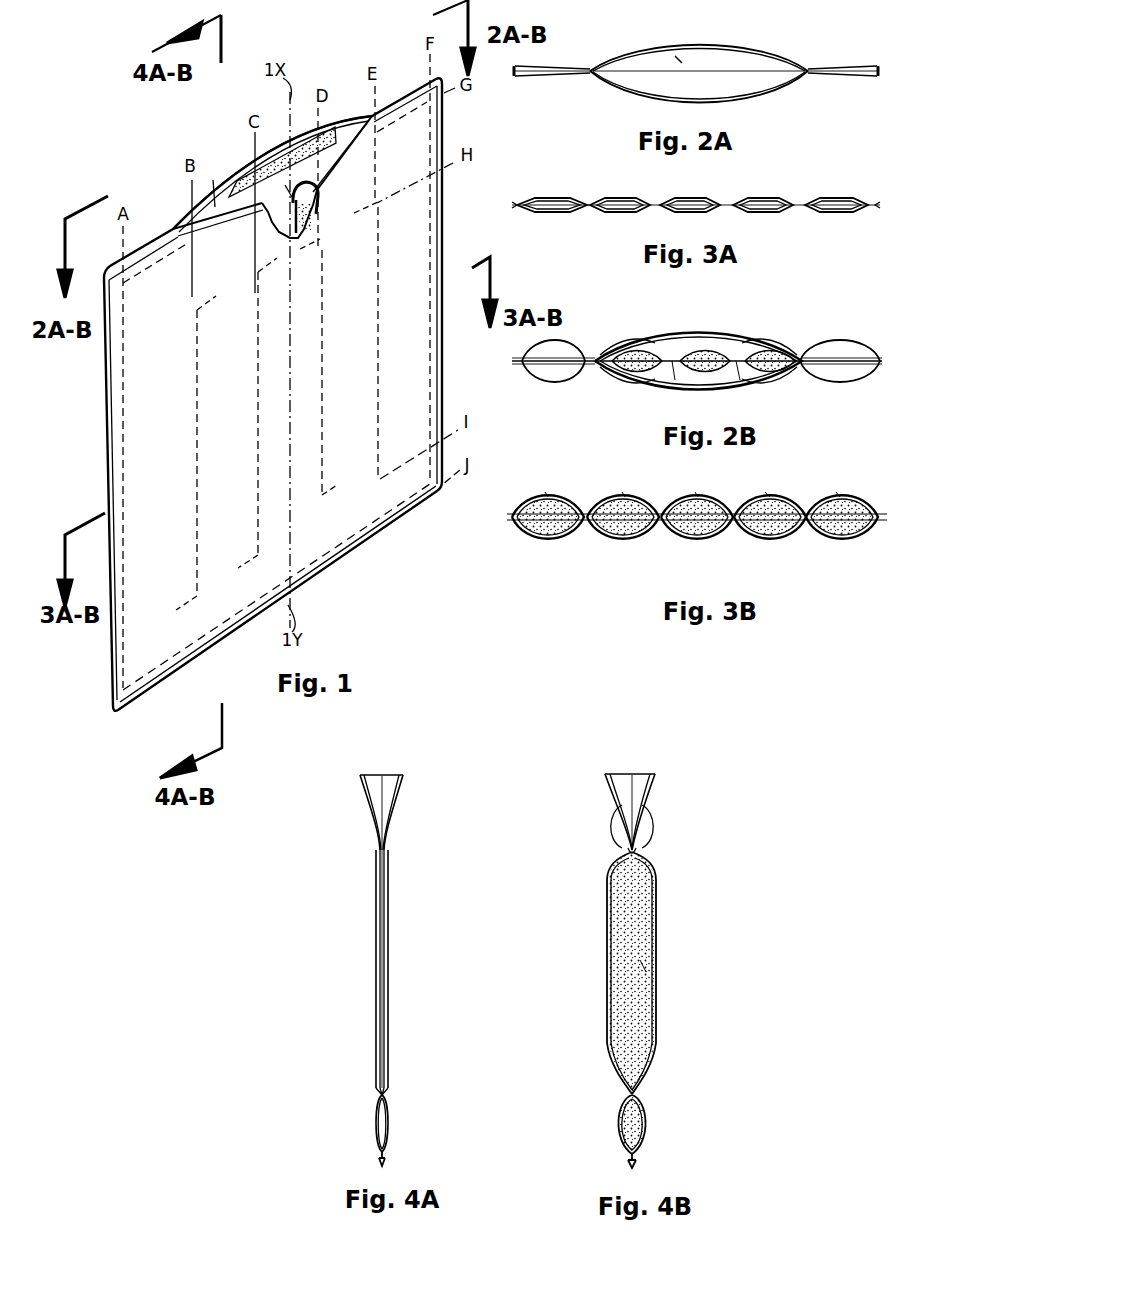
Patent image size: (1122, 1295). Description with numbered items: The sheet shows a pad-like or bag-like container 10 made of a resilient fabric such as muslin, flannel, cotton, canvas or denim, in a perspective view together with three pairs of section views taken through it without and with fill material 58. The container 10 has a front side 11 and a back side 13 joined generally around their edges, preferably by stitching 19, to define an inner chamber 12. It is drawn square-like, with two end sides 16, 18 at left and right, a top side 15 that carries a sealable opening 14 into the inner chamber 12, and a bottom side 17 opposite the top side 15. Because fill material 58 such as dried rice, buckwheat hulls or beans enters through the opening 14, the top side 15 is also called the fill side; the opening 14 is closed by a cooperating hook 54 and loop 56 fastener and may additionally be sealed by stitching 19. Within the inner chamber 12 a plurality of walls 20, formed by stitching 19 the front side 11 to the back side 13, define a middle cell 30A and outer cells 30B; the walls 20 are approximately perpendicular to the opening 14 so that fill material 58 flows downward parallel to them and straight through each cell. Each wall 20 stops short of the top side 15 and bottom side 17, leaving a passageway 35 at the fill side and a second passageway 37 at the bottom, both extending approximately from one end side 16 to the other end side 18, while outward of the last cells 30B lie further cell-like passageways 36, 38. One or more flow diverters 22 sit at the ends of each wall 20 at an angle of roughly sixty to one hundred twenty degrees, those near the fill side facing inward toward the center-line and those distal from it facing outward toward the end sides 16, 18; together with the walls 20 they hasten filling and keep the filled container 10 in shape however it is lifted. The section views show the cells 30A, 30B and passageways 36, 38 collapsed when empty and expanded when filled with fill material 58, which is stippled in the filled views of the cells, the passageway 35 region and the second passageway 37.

In FIG. 1, the container 10 is at (98, 160).
In FIG. 1, the front side 11 is at (237, 232).
In FIG. 2A, the front side 11 is at (745, 100).
In FIG. 4A, the front side 11 is at (374, 940).
In FIG. 4B, the front side 11 is at (607, 928).
In FIG. 1, the inner chamber 12 is at (345, 133).
In FIG. 1, the back side 13 is at (180, 225).
In FIG. 2A, the back side 13 is at (718, 45).
In FIG. 4A, the back side 13 is at (396, 985).
In FIG. 4B, the back side 13 is at (656, 918).
In FIG. 1, the sealable opening 14 is at (231, 180).
In FIG. 2A, the sealable opening 14 is at (682, 63).
In FIG. 4A, the sealable opening 14 is at (390, 783).
In FIG. 4B, the sealable opening 14 is at (640, 785).
In FIG. 1, the top side 15 is at (410, 83).
In FIG. 4A, the top side 15 is at (405, 775).
In FIG. 4B, the top side 15 is at (655, 776).
In FIG. 1, the end side 16 is at (106, 445).
In FIG. 2A, the end side 16 is at (515, 76).
In FIG. 3A, the end side 16 is at (512, 210).
In FIG. 1, the bottom side 17 is at (349, 556).
In FIG. 4A, the bottom side 17 is at (385, 1163).
In FIG. 4B, the bottom side 17 is at (637, 1163).
In FIG. 1, the end side 18 is at (446, 104).
In FIG. 2A, the end side 18 is at (880, 66).
In FIG. 3A, the end side 18 is at (872, 212).
In FIG. 1, the stitching 19 is at (178, 662).
In FIG. 1, the wall 20 is at (380, 285).
In FIG. 1, the flow diverter 22 is at (364, 218).
In FIG. 2B, the flow diverter 22 is at (675, 380).
In FIG. 1, the cell 30A is at (290, 360).
In FIG. 3A, the cell 30A is at (692, 198).
In FIG. 2B, the cell 30A is at (694, 343).
In FIG. 3B, the cell 30A is at (702, 544).
In FIG. 1, the cell 30B is at (320, 268).
In FIG. 3A, the cell 30B is at (626, 198).
In FIG. 2B, the cell 30B is at (648, 344).
In FIG. 3B, the cell 30B is at (626, 544).
In FIG. 4B, the cell 30B is at (650, 968).
In FIG. 1, the passageway 35 is at (308, 210).
In FIG. 4B, the passageway 35 is at (648, 836).
In FIG. 1, the passageway 36 is at (149, 457).
In FIG. 3A, the passageway 36 is at (548, 198).
In FIG. 2B, the passageway 36 is at (556, 385).
In FIG. 3B, the passageway 36 is at (546, 544).
In FIG. 1, the second passageway 37 is at (383, 507).
In FIG. 4B, the second passageway 37 is at (650, 1130).
In FIG. 1, the passageway 38 is at (419, 394).
In FIG. 3A, the passageway 38 is at (836, 198).
In FIG. 2B, the passageway 38 is at (840, 385).
In FIG. 3B, the passageway 38 is at (840, 544).
In FIG. 1, the hook 54 is at (243, 173).
In FIG. 1, the loop 56 is at (285, 190).
In FIG. 2B, the fill material 58 is at (628, 374).
In FIG. 3B, the fill material 58 is at (547, 494).
In FIG. 4B, the fill material 58 is at (620, 1015).